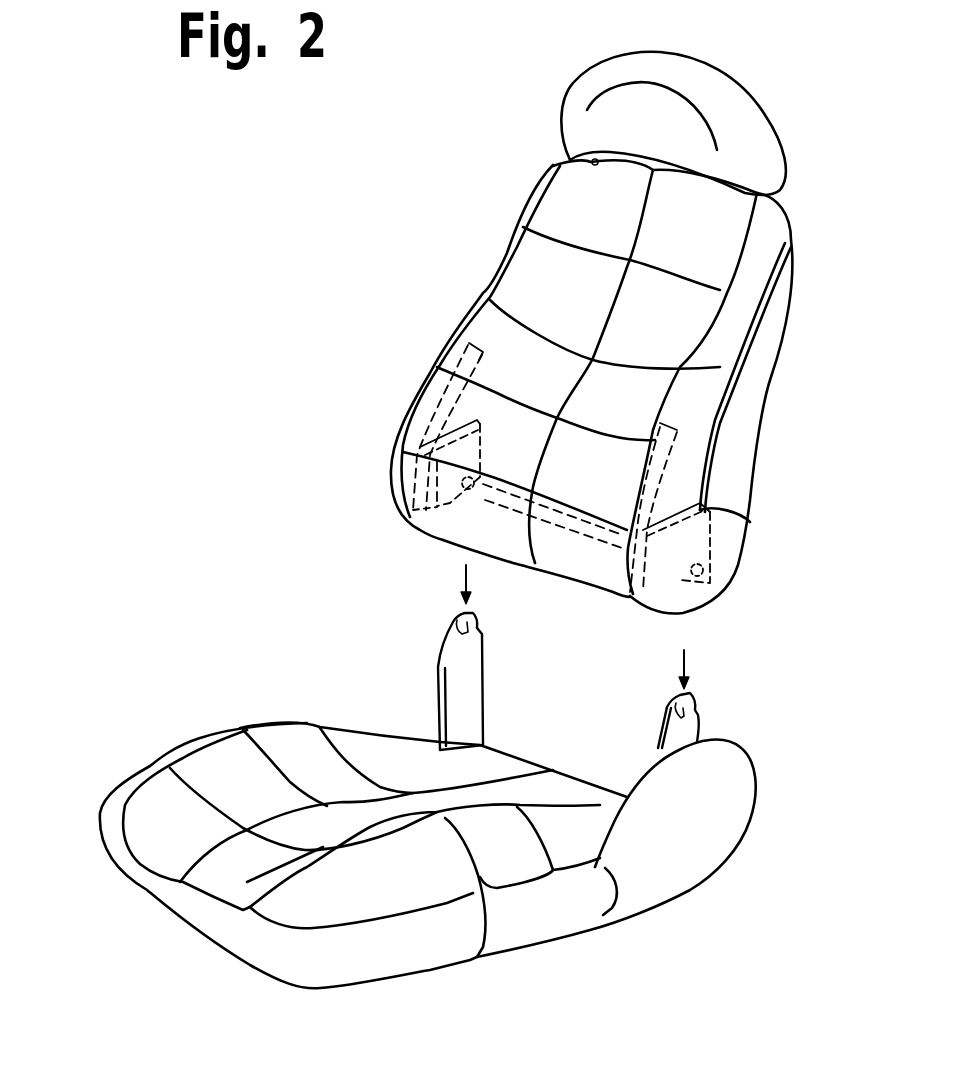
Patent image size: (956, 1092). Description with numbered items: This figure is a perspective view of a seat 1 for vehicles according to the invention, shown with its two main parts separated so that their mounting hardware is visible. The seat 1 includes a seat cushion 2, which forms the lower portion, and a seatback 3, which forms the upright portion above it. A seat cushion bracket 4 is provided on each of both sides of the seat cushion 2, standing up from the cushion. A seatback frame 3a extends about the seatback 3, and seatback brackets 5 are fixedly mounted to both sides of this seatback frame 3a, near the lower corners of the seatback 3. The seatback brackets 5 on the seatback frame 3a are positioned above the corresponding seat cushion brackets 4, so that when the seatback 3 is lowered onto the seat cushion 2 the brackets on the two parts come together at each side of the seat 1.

The seat 1 is at (37, 797).
The seat cushion 2 is at (313, 743).
The seatback 3 is at (495, 357).
The seatback frame 3a is at (428, 411).
The seat cushion bracket 4 is at (470, 707).
The seatback bracket 5 is at (437, 473).